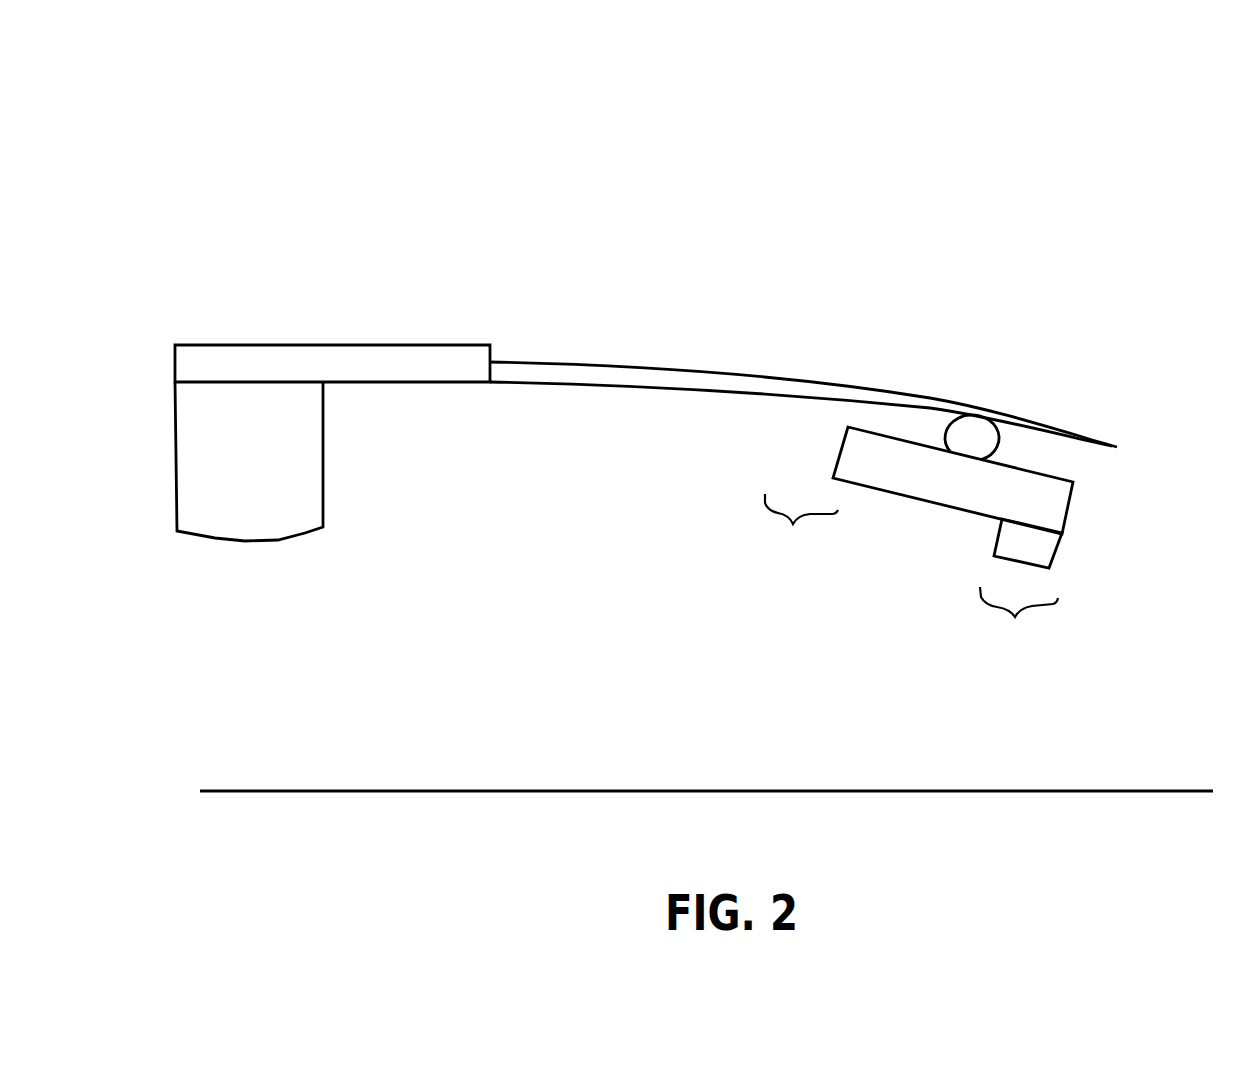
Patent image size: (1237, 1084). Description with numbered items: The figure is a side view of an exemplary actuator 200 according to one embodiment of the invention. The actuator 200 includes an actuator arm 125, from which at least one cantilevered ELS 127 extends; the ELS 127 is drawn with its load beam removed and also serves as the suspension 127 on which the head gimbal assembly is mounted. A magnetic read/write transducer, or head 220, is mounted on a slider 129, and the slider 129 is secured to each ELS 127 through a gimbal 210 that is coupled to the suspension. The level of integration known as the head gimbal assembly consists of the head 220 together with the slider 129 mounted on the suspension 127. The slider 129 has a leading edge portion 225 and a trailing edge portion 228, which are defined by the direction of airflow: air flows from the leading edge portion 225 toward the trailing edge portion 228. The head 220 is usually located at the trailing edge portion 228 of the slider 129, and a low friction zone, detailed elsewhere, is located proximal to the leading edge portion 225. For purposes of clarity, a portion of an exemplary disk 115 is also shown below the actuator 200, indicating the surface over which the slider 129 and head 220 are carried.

The actuator 200 is at (792, 96).
The actuator arm 125 is at (320, 342).
The ELS 127 is at (718, 388).
The slider 129 is at (1048, 503).
The gimbal 210 is at (985, 441).
The head 220 is at (1055, 553).
The leading edge portion 225 is at (801, 528).
The trailing edge portion 228 is at (1019, 623).
The disk 115 is at (540, 790).